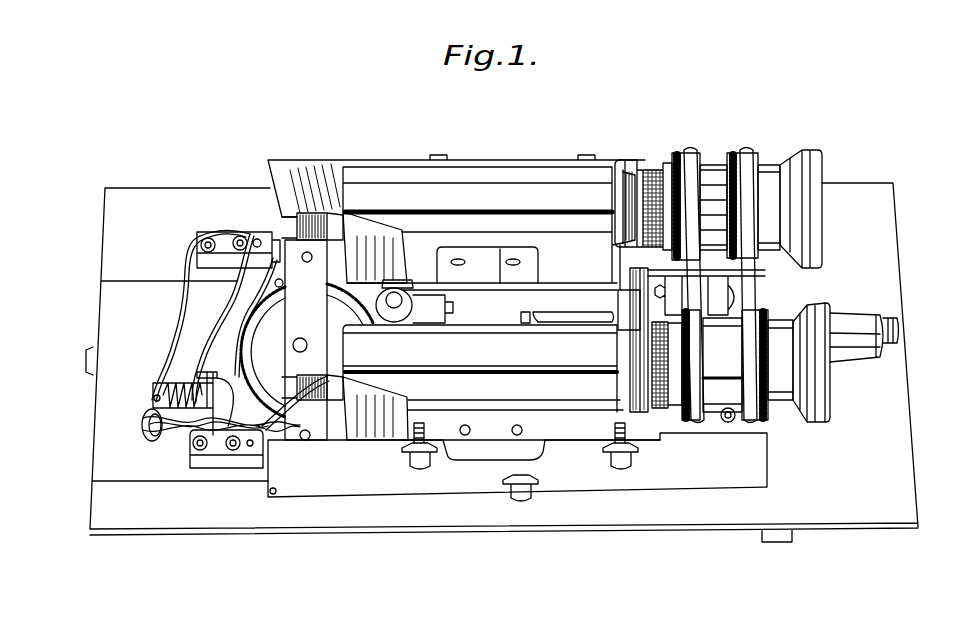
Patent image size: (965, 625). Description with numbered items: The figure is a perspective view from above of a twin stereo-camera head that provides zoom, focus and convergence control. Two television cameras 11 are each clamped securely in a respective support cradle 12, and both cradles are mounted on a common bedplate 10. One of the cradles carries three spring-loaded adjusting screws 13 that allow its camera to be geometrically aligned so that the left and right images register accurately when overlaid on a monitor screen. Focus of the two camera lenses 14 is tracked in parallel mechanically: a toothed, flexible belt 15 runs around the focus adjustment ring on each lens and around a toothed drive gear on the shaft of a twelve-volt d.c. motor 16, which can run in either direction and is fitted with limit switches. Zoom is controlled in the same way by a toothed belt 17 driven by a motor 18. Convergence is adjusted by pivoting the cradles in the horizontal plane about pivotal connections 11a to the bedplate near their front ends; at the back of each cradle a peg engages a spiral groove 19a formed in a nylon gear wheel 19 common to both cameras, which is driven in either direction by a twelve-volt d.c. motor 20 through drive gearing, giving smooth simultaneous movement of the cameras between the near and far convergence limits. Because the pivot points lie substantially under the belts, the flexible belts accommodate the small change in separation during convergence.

The bedplate 10 is at (843, 513).
The television camera 11 is at (523, 157).
The pivotal connection 11a is at (726, 422).
The support cradle 12 is at (348, 157).
The spring-loaded adjusting screw 13 is at (425, 470).
The camera lens 14 is at (790, 160).
The toothed flexible belt 15 is at (690, 158).
The motor 16 is at (705, 297).
The toothed belt 17 is at (742, 158).
The motor 18 is at (850, 323).
The nylon gear wheel 19 is at (262, 333).
The spiral groove 19a is at (296, 341).
The motor 20 is at (398, 302).